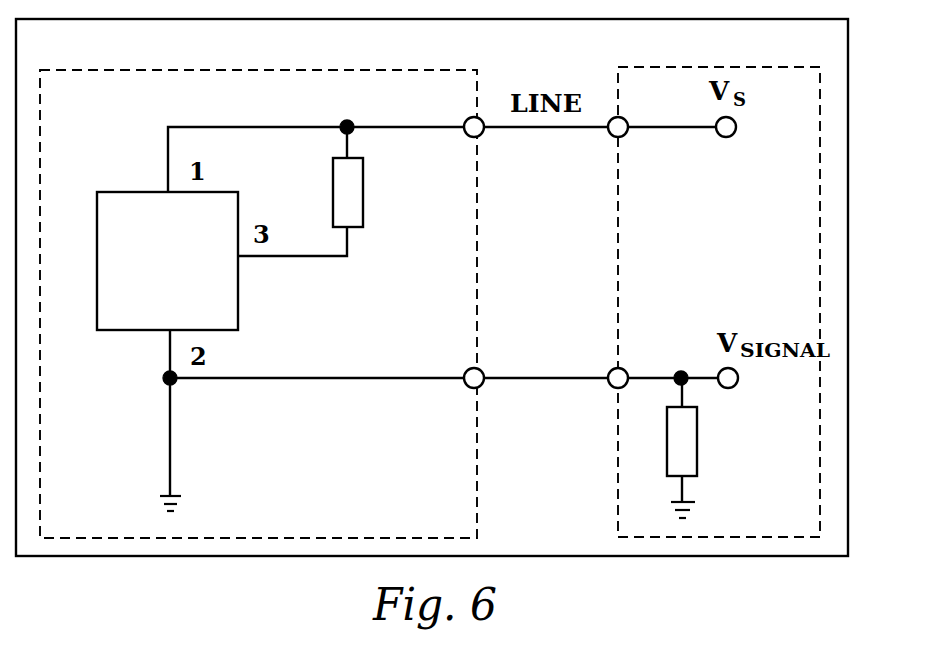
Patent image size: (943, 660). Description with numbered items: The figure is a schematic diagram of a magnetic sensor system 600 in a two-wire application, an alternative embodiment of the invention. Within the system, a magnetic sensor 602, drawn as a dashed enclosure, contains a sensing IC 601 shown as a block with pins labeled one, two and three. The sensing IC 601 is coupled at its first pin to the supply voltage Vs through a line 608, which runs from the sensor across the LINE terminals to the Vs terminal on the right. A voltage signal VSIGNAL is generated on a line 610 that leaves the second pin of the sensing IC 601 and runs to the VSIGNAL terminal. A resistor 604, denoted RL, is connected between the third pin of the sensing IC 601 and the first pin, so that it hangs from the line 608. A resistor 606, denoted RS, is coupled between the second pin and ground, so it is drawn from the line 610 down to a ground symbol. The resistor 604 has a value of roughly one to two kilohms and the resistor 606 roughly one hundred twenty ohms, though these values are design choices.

The magnetic sensor system 600 is at (98, 57).
The magnetic sensor 602 is at (98, 107).
The sensing IC 601 is at (136, 192).
The line 608 is at (228, 128).
The resistor 604 is at (362, 228).
The line 610 is at (326, 380).
The resistor 606 is at (697, 462).